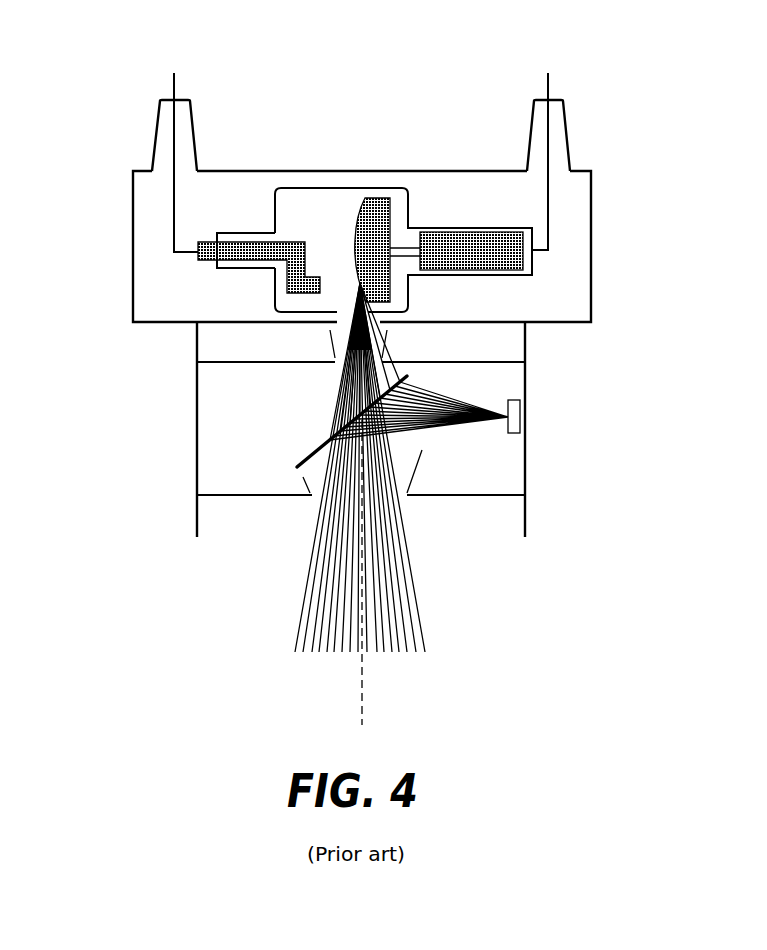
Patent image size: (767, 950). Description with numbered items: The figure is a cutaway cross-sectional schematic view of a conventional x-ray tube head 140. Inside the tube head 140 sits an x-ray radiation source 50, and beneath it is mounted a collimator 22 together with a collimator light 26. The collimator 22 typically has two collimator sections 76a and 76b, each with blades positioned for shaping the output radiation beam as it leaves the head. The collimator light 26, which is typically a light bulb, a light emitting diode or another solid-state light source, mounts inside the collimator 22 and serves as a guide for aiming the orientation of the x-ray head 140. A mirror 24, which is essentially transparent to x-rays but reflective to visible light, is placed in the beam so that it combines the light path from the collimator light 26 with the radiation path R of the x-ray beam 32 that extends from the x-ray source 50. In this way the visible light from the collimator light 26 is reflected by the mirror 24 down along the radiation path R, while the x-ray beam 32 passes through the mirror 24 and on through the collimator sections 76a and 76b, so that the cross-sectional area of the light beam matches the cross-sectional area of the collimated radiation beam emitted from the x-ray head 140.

The x-ray tube head 140 is at (592, 247).
The x-ray radiation source 50 is at (345, 268).
The collimator 22 is at (197, 505).
The collimator section 76a is at (483, 358).
The collimator section 76b is at (475, 495).
The x-ray beam 32 is at (348, 340).
The mirror 24 is at (328, 443).
The collimator light 26 is at (523, 420).
The radiation path R is at (367, 697).